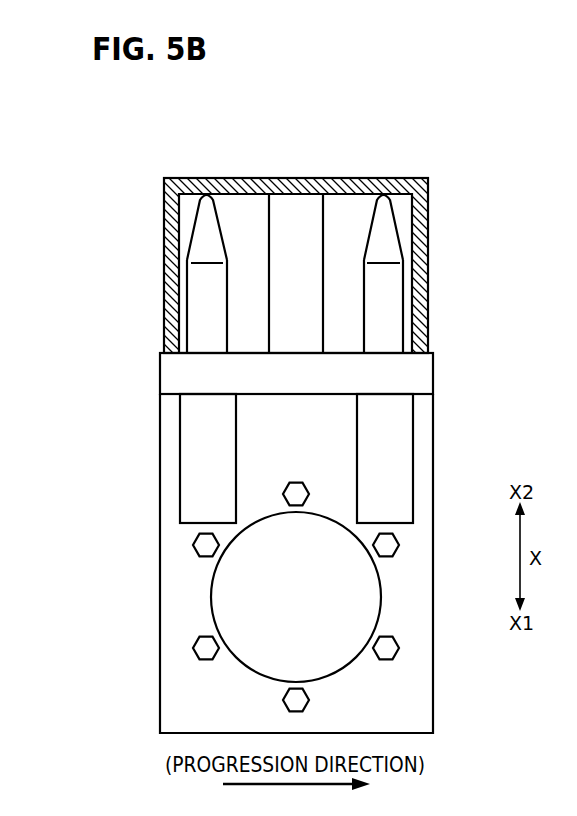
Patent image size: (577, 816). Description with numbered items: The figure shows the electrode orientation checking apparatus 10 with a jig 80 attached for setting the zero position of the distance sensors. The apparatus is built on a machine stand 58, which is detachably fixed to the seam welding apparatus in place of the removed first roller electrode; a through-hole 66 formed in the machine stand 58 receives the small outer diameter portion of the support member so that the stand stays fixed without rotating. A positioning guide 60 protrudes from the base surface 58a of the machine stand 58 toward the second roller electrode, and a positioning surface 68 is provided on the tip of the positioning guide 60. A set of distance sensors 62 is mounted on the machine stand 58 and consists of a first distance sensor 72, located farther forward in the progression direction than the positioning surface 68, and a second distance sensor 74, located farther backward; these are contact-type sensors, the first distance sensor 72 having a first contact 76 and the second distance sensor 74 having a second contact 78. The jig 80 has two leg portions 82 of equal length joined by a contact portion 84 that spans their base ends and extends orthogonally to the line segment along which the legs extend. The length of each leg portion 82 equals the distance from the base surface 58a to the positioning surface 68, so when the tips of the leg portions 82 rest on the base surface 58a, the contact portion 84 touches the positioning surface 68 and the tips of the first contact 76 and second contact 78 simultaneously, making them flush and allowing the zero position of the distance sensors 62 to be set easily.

The electrode orientation checking apparatus 10 is at (456, 62).
The machine stand 58 is at (420, 572).
The base surface 58a is at (303, 352).
The positioning guide 60 is at (277, 220).
The distance sensors 62 is at (296, 227).
The through-hole 66 is at (352, 650).
The positioning surface 68 is at (303, 192).
The first distance sensor 72 is at (395, 215).
The second distance sensor 74 is at (196, 212).
The first contact 76 is at (390, 285).
The second contact 78 is at (201, 285).
The jig 80 is at (401, 176).
The leg portions 82 is at (170, 306).
The contact portion 84 is at (213, 189).